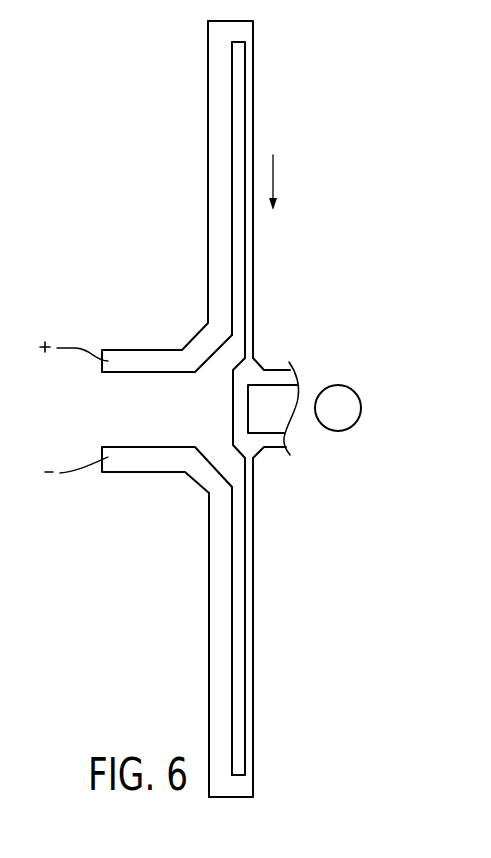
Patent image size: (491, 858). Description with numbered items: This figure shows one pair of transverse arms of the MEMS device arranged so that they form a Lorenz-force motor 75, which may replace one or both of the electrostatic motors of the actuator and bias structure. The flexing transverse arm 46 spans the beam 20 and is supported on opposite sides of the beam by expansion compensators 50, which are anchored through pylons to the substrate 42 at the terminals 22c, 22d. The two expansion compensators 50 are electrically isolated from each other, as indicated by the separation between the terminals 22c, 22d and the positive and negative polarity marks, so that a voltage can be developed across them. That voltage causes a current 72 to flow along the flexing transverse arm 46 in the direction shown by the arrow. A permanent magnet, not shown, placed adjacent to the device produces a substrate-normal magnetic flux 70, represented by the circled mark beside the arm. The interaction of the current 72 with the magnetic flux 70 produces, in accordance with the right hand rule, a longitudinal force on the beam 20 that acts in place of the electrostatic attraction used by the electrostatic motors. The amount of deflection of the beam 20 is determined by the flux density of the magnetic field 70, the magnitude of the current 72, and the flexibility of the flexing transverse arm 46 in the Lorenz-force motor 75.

The Lorenz-force motor 75 is at (227, 409).
The expansion compensator 50 is at (218, 183).
The flexing transverse arm 46 is at (253, 658).
The terminal 22c is at (143, 358).
The terminal 22d is at (152, 460).
The beam 20 is at (273, 451).
The current 72 is at (275, 182).
The substrate-normal magnetic flux 70 is at (338, 385).
The substrate 42 is at (73, 317).